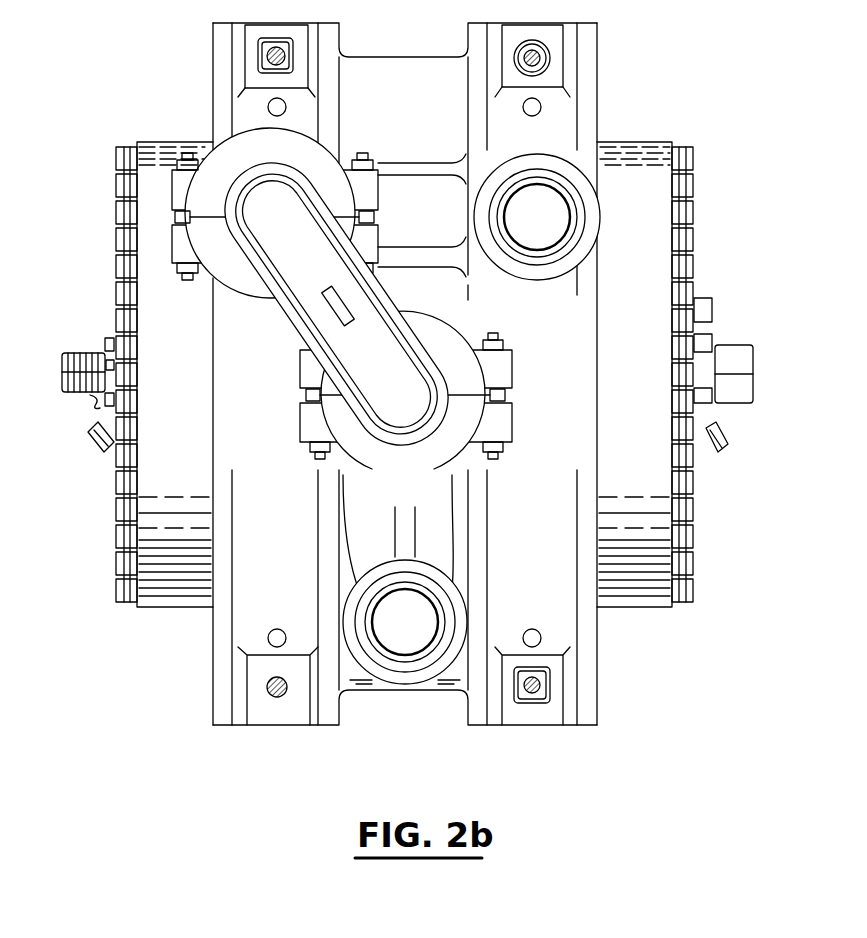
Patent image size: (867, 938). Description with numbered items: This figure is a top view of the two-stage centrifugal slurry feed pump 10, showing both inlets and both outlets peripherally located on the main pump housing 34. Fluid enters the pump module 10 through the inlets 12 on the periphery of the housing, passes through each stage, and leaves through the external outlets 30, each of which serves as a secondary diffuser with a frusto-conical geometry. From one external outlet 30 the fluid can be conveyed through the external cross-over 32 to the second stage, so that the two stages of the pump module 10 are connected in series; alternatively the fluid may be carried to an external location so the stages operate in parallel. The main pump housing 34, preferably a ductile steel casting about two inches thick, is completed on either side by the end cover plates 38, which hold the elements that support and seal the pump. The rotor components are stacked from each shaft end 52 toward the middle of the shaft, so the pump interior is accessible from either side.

The two-stage centrifugal slurry feed pump 10 is at (405, 374).
The inlet 12 is at (467, 413).
The external outlet 30 is at (246, 136).
The external cross-over 32 is at (336, 304).
The pump housing 34 is at (522, 296).
The end cover plate 38 is at (148, 287).
The shaft end 52 is at (755, 352).